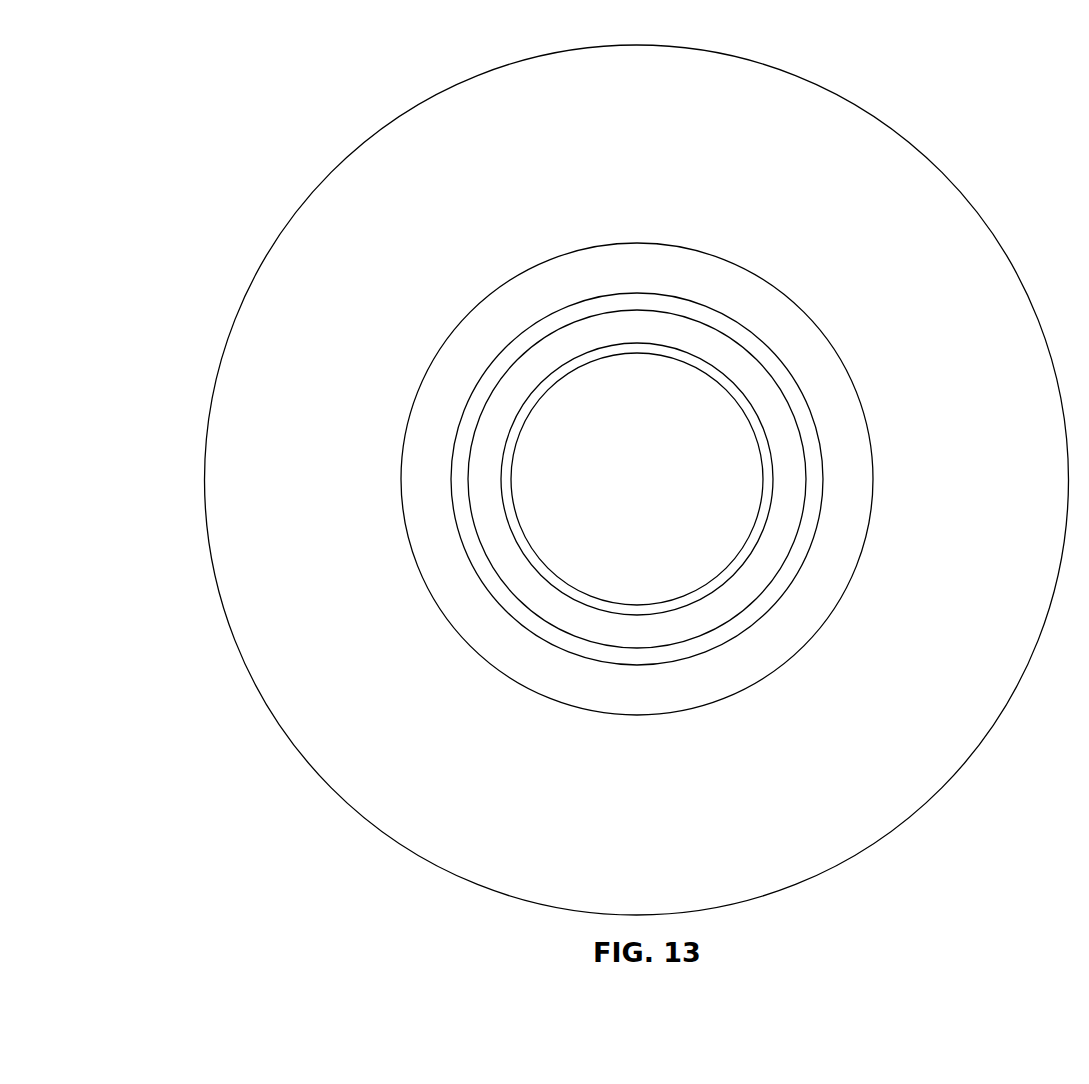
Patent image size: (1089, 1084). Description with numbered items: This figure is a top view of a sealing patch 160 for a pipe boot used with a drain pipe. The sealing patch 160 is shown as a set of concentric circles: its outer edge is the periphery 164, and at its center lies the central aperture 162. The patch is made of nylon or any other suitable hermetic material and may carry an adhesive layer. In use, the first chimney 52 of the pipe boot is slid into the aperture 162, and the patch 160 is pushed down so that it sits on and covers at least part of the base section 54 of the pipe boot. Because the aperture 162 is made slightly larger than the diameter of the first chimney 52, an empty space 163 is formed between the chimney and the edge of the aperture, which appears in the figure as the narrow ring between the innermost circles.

The sealing patch 160 is at (248, 243).
The periphery 164 is at (589, 480).
The base section 54 is at (637, 479).
The central aperture 162 is at (483, 488).
The first chimney 52 is at (536, 576).
The empty space 163 is at (525, 368).